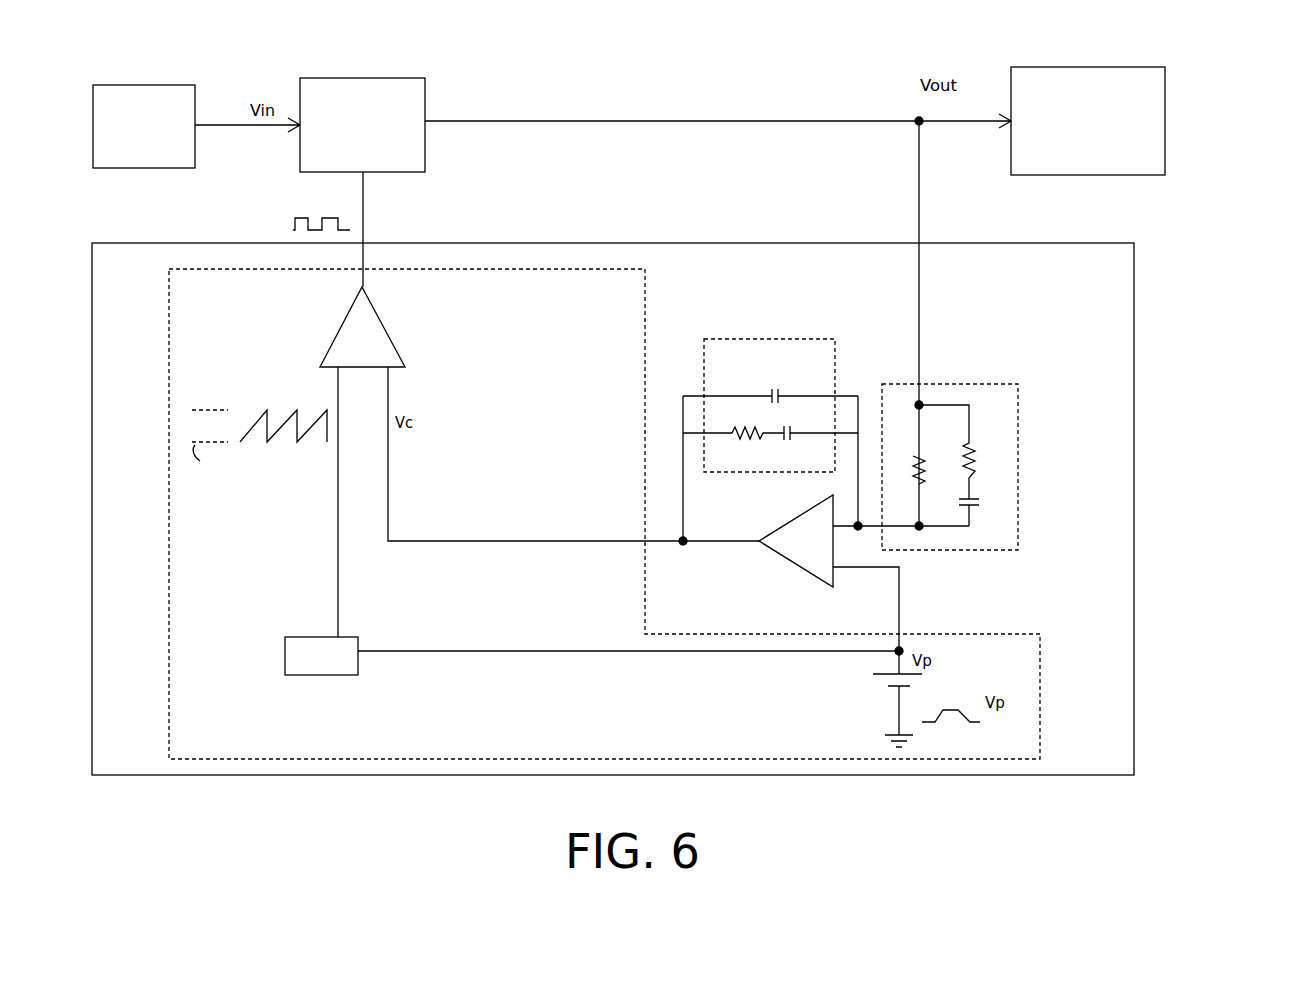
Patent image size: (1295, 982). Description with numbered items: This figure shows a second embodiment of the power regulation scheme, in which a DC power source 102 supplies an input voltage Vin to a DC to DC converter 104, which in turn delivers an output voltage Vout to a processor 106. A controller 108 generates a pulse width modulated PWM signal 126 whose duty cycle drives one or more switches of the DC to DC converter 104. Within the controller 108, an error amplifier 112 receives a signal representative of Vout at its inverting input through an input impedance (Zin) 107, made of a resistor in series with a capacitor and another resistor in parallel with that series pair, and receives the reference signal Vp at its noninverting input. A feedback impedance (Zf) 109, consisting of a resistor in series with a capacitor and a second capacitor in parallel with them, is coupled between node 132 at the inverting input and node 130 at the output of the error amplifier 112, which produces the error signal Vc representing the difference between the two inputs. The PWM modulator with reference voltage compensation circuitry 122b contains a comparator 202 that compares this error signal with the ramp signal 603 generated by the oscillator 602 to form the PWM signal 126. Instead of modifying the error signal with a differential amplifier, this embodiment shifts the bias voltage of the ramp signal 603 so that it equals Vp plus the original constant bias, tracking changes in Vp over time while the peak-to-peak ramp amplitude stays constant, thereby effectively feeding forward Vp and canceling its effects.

The DC power source 102 is at (140, 84).
The DC to DC converter 104 is at (328, 77).
The processor 106 is at (1053, 66).
The controller 108 is at (1134, 497).
The PWM signal 126 is at (293, 230).
The PWM modulator with reference voltage compensation circuitry 122b is at (168, 428).
The comparator 202 is at (328, 342).
The ramp signal 603 is at (260, 412).
The oscillator 602 is at (285, 657).
The feedback impedance (Zf) 109 is at (748, 338).
The input impedance (Zin) 107 is at (977, 383).
The error amplifier 112 is at (776, 552).
The node 130 is at (685, 543).
The node 132 is at (858, 530).